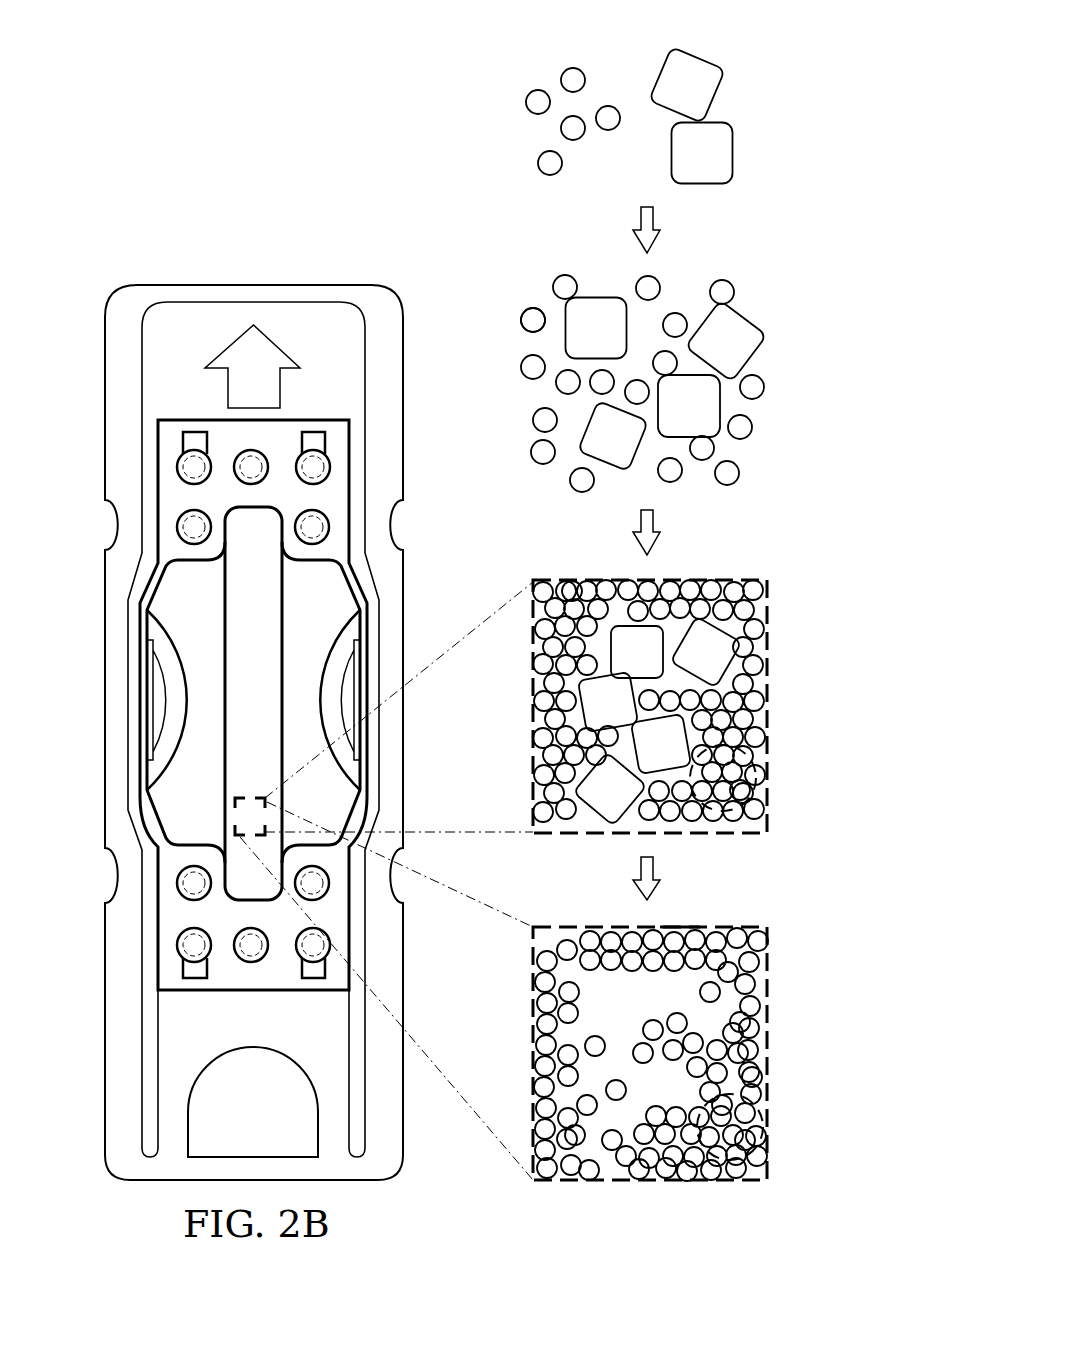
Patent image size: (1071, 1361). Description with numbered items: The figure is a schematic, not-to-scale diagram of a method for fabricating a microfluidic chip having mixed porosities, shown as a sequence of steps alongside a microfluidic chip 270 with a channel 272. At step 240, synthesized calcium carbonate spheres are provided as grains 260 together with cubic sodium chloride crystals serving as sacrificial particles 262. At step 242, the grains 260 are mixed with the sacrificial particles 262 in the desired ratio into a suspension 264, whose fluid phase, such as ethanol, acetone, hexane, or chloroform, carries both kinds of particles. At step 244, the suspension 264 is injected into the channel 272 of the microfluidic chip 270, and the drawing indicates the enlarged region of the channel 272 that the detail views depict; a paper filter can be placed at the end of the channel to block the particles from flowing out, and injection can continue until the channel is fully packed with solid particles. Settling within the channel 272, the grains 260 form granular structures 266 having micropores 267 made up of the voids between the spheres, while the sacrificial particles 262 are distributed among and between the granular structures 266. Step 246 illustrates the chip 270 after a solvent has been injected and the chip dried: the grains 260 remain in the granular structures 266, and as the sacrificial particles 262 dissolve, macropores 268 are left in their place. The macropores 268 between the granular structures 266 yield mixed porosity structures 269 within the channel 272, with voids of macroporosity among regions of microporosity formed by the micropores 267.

The step 240 is at (773, 118).
The step 242 is at (793, 389).
The step 244 is at (850, 710).
The step 246 is at (860, 1070).
The grains 260 is at (537, 100).
The sacrificial particles 262 is at (698, 67).
The suspension 264 is at (501, 386).
The granular structures 266 is at (758, 801).
The micropores 267 is at (757, 797).
The macropores 268 is at (716, 990).
The mixed porosity structures 269 is at (681, 932).
The microfluidic chip 270 is at (211, 263).
The channel 272 is at (250, 620).